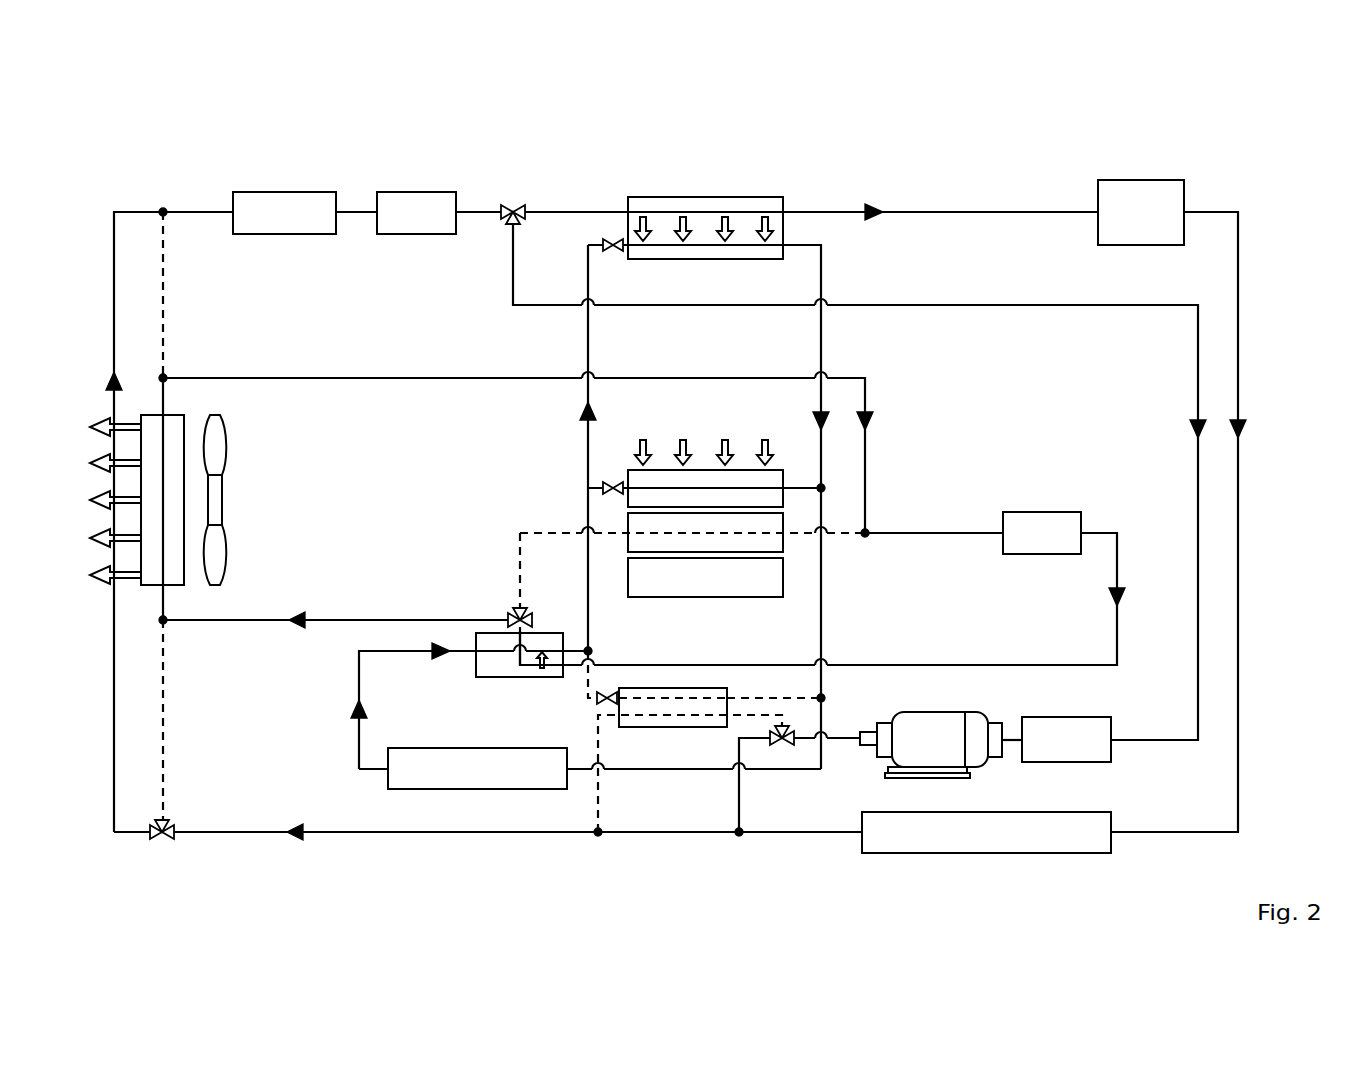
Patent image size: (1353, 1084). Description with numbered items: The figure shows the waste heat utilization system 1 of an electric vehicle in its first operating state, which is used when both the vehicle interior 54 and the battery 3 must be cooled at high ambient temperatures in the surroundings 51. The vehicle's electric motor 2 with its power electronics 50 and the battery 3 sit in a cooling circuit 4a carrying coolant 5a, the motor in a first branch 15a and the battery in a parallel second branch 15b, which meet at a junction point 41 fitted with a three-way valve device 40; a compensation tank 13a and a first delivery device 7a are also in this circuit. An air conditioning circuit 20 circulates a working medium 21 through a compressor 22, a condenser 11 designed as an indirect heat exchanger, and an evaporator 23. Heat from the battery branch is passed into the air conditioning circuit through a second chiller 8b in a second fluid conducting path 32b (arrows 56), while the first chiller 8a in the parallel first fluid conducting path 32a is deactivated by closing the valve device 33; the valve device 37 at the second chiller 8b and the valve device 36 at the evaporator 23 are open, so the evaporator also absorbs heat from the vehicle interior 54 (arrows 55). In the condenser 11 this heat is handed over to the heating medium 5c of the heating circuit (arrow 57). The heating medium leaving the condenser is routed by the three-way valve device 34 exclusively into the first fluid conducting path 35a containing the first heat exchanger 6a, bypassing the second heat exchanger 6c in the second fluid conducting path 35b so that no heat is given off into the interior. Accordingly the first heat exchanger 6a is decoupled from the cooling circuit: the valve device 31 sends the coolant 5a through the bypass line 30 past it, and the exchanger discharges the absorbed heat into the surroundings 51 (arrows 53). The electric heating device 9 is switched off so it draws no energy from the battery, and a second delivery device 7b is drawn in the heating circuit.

The waste heat utilization system 1 is at (1258, 194).
The electric motor 2 is at (937, 757).
The battery 3 is at (994, 852).
The cooling circuit 4a is at (676, 510).
The coolant 5a is at (871, 205).
The heating medium 5c is at (296, 618).
The first heat exchanger 6a is at (143, 415).
The second heat exchanger 6c is at (784, 545).
The first delivery device 7a is at (427, 230).
The pump 7b is at (1054, 552).
The first chiller 8a is at (672, 728).
The second chiller 8b is at (703, 197).
The electric heating device 9 is at (711, 594).
The condenser 11 is at (518, 678).
The compensation tank 13a is at (301, 230).
The first branch 15a is at (937, 305).
The second branch 15b is at (165, 311).
The air conditioning circuit 20 is at (357, 677).
The working medium 21 is at (582, 422).
The compressor 22 is at (492, 787).
The evaporator 23 is at (660, 470).
The bypass line 30 is at (114, 245).
The valve device 31 is at (160, 842).
The first fluid conducting path 32a is at (588, 468).
The second fluid conducting path 32b is at (823, 340).
The controllable valve device 33 is at (612, 690).
The controllable valve device 34 is at (528, 618).
The first fluid conducting path 35a is at (363, 378).
The second fluid conducting path 35b is at (913, 533).
The controllable valve device 36 is at (613, 482).
The controllable valve device 37 is at (613, 252).
The valve device 40 is at (511, 209).
The junction point 41 is at (515, 209).
The power electronics 50 is at (1078, 757).
The surroundings 51 is at (84, 517).
The arrows 53 is at (95, 416).
The vehicle interior 54 is at (704, 436).
The arrows 55 is at (770, 450).
The arrows 56 is at (770, 226).
The arrow 57 is at (543, 678).